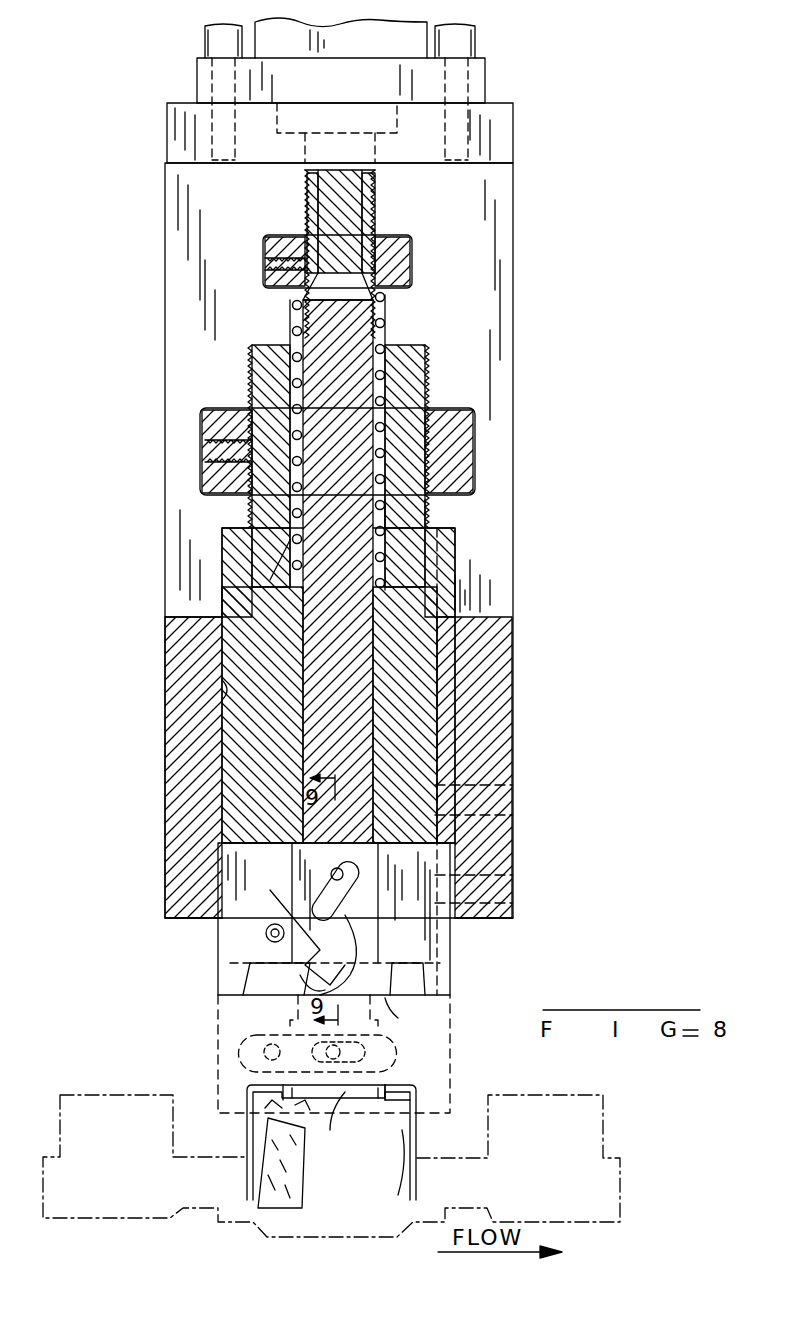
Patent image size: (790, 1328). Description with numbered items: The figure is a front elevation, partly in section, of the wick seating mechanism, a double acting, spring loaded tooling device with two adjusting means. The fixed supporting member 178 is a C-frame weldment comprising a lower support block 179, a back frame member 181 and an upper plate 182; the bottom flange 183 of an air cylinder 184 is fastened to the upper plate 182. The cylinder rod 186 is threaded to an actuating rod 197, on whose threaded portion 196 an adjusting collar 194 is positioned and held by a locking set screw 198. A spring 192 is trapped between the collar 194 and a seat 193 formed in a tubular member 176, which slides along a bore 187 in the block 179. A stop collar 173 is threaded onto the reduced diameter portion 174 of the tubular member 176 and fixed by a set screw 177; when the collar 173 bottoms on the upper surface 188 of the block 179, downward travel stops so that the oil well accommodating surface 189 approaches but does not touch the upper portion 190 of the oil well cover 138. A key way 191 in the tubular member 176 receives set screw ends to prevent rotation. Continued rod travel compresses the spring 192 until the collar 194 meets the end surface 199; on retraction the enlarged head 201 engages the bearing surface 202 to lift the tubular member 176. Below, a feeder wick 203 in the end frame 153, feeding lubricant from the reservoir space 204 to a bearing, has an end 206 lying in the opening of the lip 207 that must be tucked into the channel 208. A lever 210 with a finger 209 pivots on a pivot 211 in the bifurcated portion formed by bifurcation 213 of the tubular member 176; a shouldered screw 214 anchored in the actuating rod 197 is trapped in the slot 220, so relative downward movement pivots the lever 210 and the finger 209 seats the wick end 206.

The oil well cover 138 is at (416, 1143).
The end frame 153 is at (606, 1150).
The stop collar 173 is at (475, 447).
The reduced diameter portion 174 is at (425, 518).
The tubular member 176 is at (228, 545).
The set screw 177 is at (200, 449).
The fixed supporting member 178 is at (533, 574).
The lower support block 179 is at (513, 668).
The back frame member 181 is at (513, 340).
The upper plate 182 is at (167, 135).
The bottom flange 183 is at (200, 75).
The air cylinder 184 is at (455, 26).
The cylinder rod 186 is at (375, 178).
The bore 187 is at (222, 688).
The upper surface 188 is at (195, 612).
The oil well accommodating surface 189 is at (406, 1015).
The upper portion 190 is at (388, 1090).
The key way 191 is at (445, 582).
The spring 192 is at (385, 332).
The seat 193 is at (290, 545).
The adjusting collar 194 is at (412, 252).
The threaded portion 196 is at (305, 205).
The actuating rod 197 is at (313, 322).
The locking set screw 198 is at (265, 263).
The end surface 199 is at (405, 345).
The enlarged head 201 is at (378, 843).
The bearing surface 202 is at (300, 840).
The feeder wick 203 is at (290, 1170).
The space 204 is at (372, 1172).
The end 206 is at (265, 1110).
The lip 207 is at (344, 1122).
The channel 208 is at (410, 1092).
The finger 209 is at (320, 982).
The lever 210 is at (293, 908).
The pivot 211 is at (268, 926).
The bifurcation 213 is at (232, 958).
The shouldered screw 214 is at (343, 873).
The slot 220 is at (342, 895).